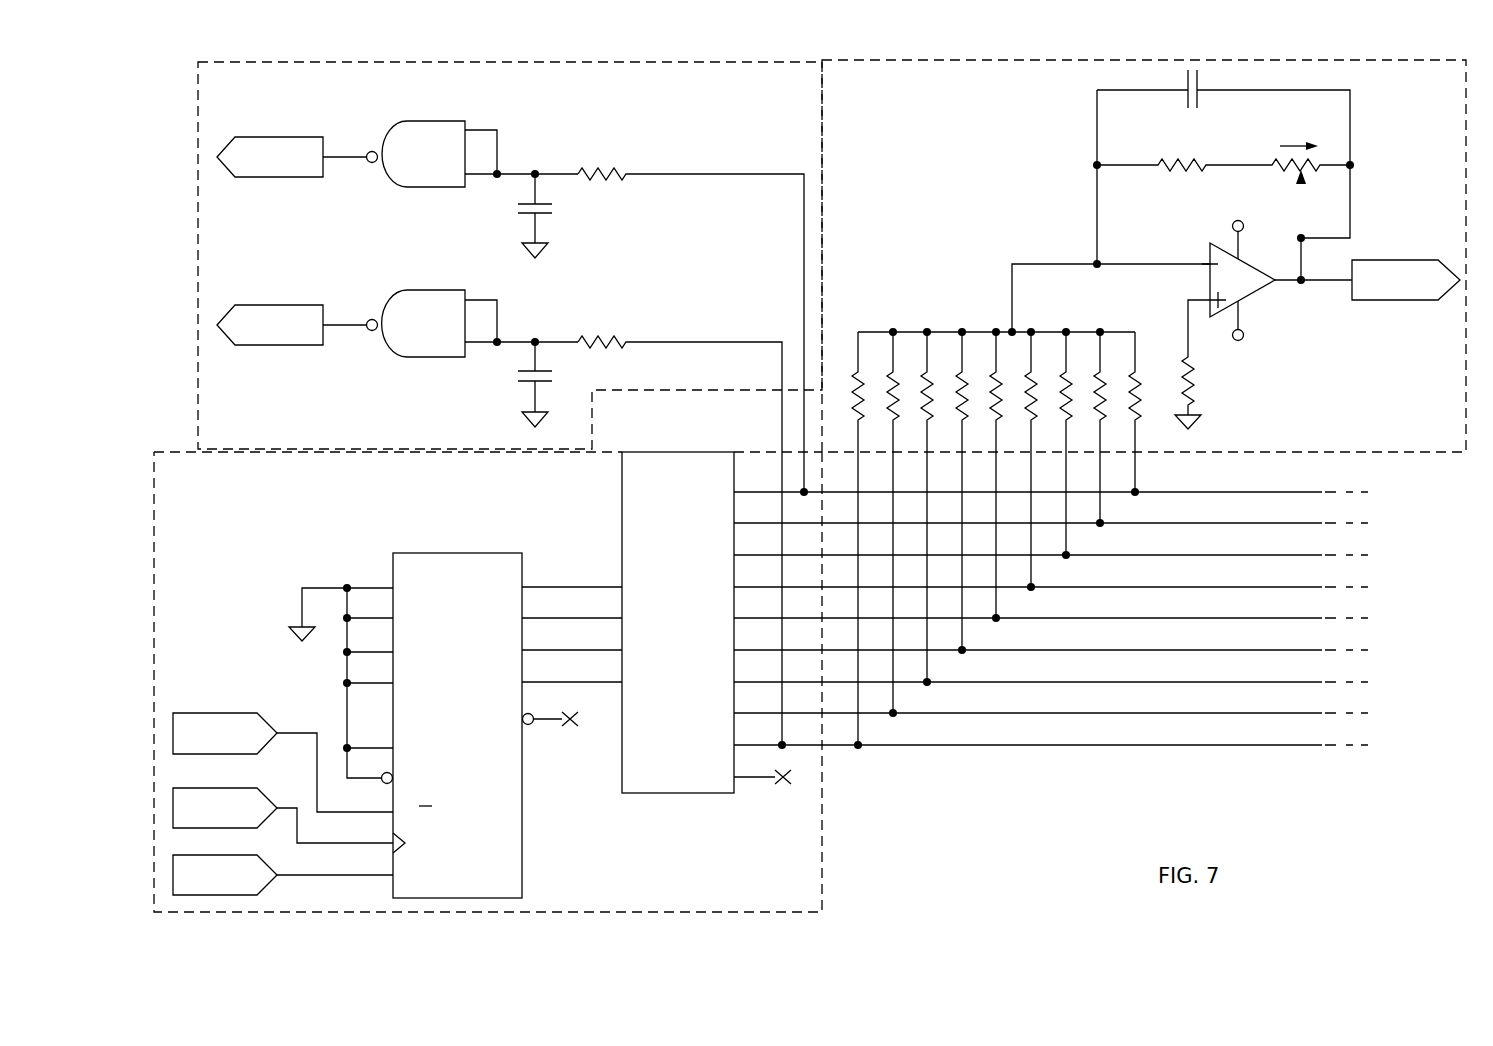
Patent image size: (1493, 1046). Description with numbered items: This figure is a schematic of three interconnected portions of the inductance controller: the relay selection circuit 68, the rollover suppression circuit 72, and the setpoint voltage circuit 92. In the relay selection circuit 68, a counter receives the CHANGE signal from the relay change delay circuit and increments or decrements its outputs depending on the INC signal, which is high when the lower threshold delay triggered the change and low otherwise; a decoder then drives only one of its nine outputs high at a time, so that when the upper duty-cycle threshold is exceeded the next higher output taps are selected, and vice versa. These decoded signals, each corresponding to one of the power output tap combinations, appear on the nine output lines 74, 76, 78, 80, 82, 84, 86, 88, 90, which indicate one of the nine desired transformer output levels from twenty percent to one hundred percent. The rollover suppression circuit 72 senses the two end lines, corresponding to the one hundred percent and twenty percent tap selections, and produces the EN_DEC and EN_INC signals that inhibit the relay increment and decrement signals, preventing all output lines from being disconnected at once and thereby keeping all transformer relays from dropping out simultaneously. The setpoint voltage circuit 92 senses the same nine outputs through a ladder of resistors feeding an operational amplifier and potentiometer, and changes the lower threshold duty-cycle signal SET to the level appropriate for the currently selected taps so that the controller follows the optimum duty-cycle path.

The relay selection circuit 68 is at (833, 855).
The rollover suppression circuit 72 is at (193, 226).
The setpoint voltage circuit 92 is at (1417, 458).
The output line 74 is at (1000, 744).
The output line 76 is at (1028, 711).
The output line 78 is at (1053, 680).
The output line 80 is at (1078, 648).
The output line 82 is at (1104, 617).
The output line 84 is at (1126, 586).
The output line 86 is at (1161, 554).
The output line 88 is at (1186, 522).
The output line 90 is at (1222, 491).